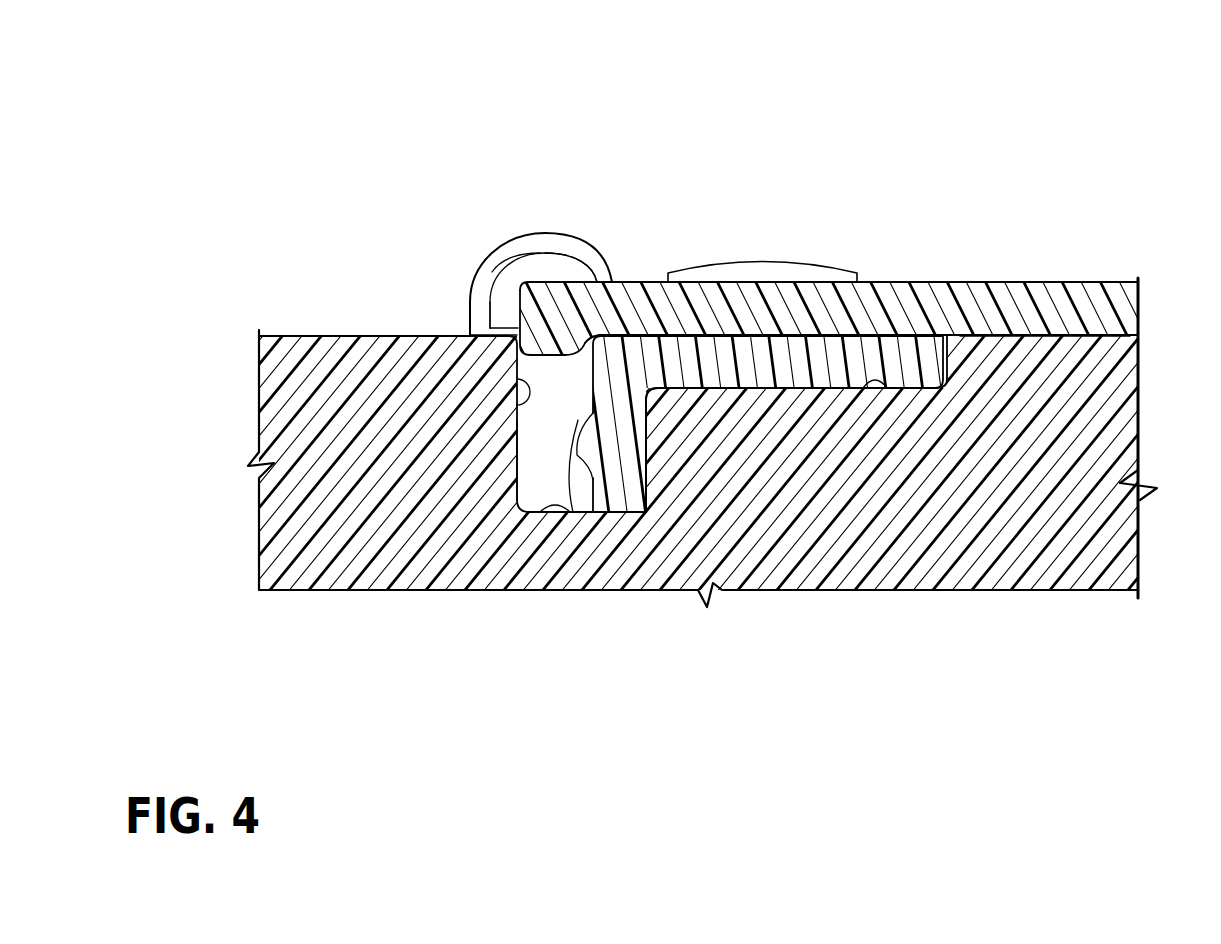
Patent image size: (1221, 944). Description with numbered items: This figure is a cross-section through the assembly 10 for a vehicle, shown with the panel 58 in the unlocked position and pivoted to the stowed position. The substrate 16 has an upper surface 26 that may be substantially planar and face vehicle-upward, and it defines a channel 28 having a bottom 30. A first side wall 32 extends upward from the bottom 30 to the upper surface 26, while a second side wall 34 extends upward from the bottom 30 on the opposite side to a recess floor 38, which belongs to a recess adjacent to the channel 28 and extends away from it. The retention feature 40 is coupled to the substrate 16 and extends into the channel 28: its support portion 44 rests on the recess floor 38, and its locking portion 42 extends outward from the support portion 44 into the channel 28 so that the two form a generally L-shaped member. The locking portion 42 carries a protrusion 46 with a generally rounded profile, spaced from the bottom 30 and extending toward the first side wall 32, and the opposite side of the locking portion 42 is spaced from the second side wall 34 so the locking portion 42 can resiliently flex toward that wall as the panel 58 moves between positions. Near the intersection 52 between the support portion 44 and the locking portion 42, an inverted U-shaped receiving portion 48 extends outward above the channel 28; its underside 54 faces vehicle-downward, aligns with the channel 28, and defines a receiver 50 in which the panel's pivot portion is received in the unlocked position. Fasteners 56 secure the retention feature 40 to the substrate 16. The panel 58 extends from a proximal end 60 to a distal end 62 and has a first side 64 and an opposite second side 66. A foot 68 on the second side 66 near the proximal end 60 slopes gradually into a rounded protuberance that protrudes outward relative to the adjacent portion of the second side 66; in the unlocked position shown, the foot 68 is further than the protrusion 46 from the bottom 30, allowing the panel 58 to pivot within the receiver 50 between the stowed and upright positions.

The assembly 10 is at (845, 172).
The substrate 16 is at (395, 433).
The upper surface 26 is at (346, 335).
The channel 28 is at (556, 432).
The bottom 30 is at (568, 514).
The first side wall 32 is at (530, 405).
The second side wall 34 is at (645, 495).
The recess floor 38 is at (868, 390).
The retention feature 40 is at (546, 230).
The locking portion 42 is at (615, 438).
The support portion 44 is at (786, 374).
The protrusion 46 is at (583, 515).
The receiving portion 48 is at (517, 250).
The receiver 50 is at (515, 280).
The intersection 52 is at (593, 340).
The underside 54 is at (510, 342).
The fasteners 56 is at (766, 270).
The panel 58 is at (926, 300).
The proximal end 60 is at (470, 331).
The distal end 62 is at (1113, 313).
The first side 64 is at (985, 282).
The second side 66 is at (1047, 336).
The foot 68 is at (577, 340).